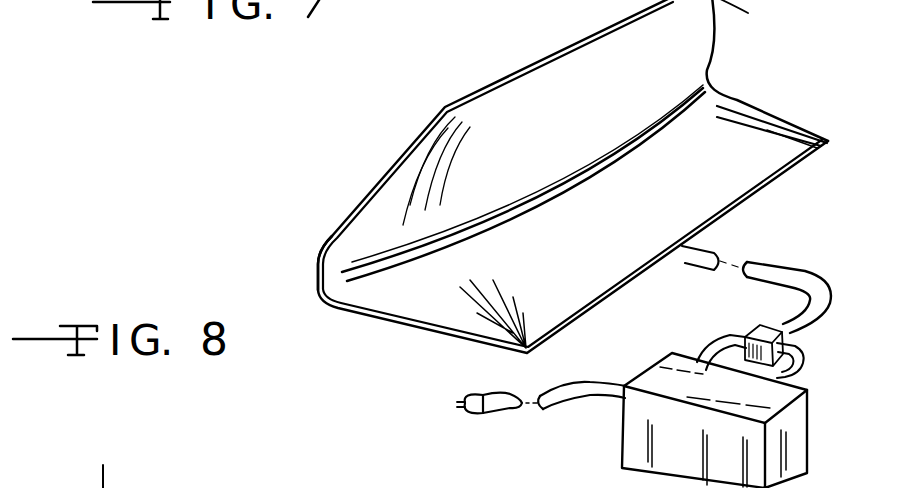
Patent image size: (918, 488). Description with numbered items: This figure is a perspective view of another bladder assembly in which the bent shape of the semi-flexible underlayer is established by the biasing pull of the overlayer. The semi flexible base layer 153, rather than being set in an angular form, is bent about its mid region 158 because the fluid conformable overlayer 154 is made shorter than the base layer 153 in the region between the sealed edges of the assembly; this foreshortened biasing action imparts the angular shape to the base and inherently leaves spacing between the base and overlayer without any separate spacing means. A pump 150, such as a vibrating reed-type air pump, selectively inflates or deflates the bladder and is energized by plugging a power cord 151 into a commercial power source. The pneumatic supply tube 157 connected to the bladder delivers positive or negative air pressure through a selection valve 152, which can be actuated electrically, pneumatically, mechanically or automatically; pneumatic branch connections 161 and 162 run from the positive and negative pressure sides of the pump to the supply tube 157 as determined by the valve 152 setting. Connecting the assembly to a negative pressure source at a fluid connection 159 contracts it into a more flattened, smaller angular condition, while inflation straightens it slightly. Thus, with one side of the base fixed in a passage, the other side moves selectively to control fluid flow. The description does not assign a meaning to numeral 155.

The pump 150 is at (618, 442).
The power cord 151 is at (552, 390).
The selection valve 152 is at (760, 326).
The semi flexible base layer 153 is at (382, 180).
The fluid conformable overlayer 154 is at (787, 110).
The notch 155 is at (748, 13).
The pneumatic supply tube 157 is at (788, 268).
The mid region 158 is at (317, 274).
The fluid connection 159 is at (714, 252).
The pneumatic branch connection 161 is at (712, 340).
The pneumatic branch connection 162 is at (796, 370).